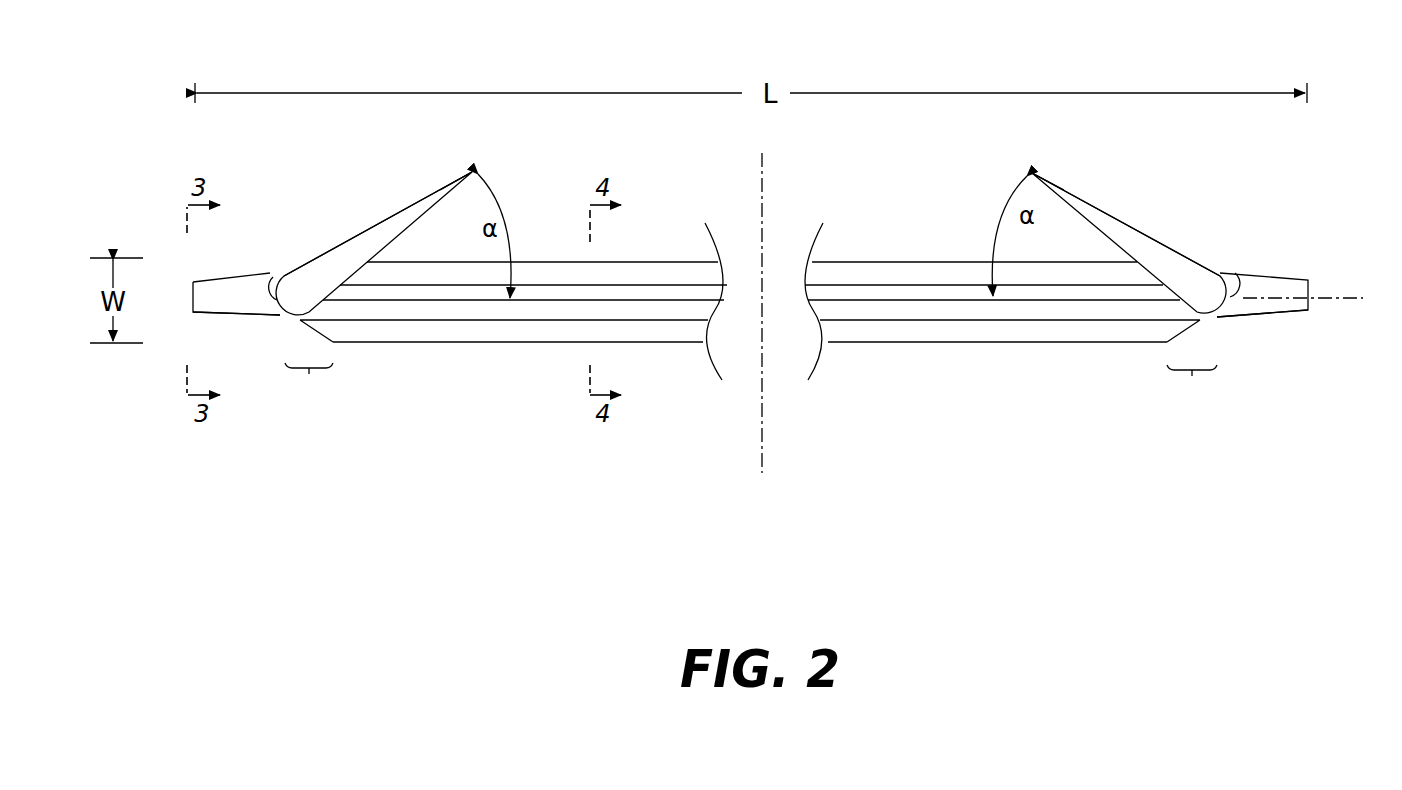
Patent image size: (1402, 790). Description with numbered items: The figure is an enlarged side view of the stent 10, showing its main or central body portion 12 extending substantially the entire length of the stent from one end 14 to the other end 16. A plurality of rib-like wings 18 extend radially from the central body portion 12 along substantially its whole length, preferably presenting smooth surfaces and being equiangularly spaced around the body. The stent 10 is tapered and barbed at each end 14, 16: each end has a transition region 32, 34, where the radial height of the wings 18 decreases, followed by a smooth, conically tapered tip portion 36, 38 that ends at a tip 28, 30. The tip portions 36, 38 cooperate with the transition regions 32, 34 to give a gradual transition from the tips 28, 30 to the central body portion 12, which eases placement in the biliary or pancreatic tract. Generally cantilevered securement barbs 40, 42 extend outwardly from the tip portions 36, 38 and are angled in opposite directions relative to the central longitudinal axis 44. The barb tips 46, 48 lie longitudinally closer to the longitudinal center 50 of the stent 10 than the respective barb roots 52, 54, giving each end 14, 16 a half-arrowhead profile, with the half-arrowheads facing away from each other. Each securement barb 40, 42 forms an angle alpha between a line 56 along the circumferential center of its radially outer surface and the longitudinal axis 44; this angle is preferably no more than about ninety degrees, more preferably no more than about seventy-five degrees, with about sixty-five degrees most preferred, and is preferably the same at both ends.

The stent 10 is at (1115, 456).
The main or central body portion 12 is at (837, 260).
The one end 14 is at (318, 205).
The other end 16 is at (1205, 236).
The rib-like wings 18 is at (457, 307).
The tip 28 is at (210, 293).
The other tip 30 is at (1308, 280).
The transition region 32 is at (309, 385).
The transition region 34 is at (1192, 387).
The tip portion 36 is at (257, 300).
The tip portion 38 is at (1252, 312).
The securement barb 40 is at (360, 223).
The securement barb 42 is at (1150, 227).
The central longitudinal axis 44 is at (1337, 290).
The barb tip 46 is at (470, 172).
The barb tip 48 is at (1032, 170).
The longitudinal center 50 is at (767, 450).
The barb root 52 is at (268, 273).
The barb root 54 is at (1235, 267).
The line 56 is at (477, 170).